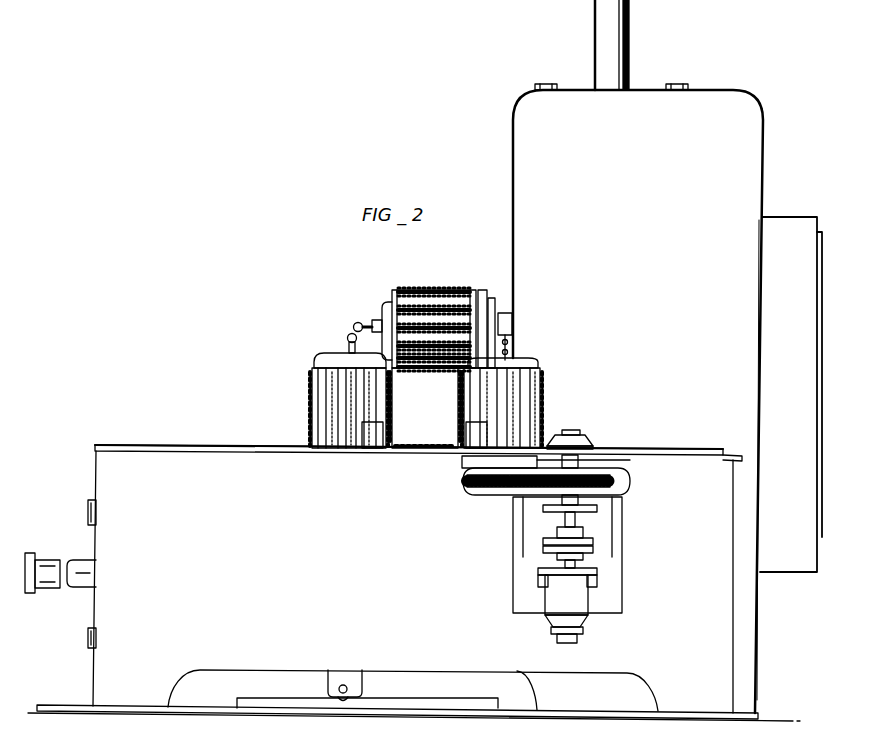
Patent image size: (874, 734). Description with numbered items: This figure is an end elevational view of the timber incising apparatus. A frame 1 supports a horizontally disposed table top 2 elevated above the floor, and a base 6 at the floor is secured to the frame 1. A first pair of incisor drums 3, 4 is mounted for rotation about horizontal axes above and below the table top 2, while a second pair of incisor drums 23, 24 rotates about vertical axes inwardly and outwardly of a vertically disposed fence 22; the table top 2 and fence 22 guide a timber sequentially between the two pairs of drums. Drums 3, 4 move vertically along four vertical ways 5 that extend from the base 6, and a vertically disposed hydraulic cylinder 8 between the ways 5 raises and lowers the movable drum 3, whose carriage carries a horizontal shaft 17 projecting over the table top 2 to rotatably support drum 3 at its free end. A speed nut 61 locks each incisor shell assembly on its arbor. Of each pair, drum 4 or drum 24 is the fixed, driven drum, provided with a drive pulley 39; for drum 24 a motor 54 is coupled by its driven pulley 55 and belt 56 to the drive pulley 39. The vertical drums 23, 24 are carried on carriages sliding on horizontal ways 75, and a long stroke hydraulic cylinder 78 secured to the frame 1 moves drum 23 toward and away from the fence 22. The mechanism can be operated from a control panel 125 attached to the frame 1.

The frame 1 is at (303, 601).
The table top 2 is at (222, 447).
The incisor drum 3 is at (410, 283).
The incisor drum 4 is at (425, 445).
The vertical ways 5 is at (546, 84).
The base 6 is at (76, 709).
The hydraulic cylinder 8 is at (623, 19).
The shaft 17 is at (507, 312).
The fence 22 is at (372, 442).
The incisor drum 23 is at (308, 386).
The incisor drum 24 is at (548, 392).
The drive pulley 39 is at (481, 494).
The motor 54 is at (566, 605).
The driven pulley 55 is at (605, 471).
The belt 56 is at (526, 481).
The speed nut 61 is at (350, 336).
The horizontal ways 75 is at (88, 508).
The hydraulic cylinder 78 is at (82, 568).
The control panel 125 is at (786, 566).